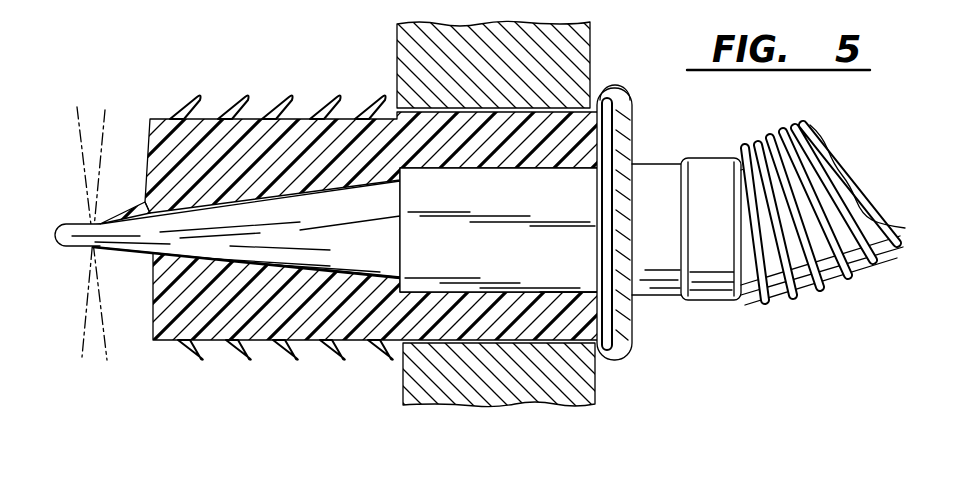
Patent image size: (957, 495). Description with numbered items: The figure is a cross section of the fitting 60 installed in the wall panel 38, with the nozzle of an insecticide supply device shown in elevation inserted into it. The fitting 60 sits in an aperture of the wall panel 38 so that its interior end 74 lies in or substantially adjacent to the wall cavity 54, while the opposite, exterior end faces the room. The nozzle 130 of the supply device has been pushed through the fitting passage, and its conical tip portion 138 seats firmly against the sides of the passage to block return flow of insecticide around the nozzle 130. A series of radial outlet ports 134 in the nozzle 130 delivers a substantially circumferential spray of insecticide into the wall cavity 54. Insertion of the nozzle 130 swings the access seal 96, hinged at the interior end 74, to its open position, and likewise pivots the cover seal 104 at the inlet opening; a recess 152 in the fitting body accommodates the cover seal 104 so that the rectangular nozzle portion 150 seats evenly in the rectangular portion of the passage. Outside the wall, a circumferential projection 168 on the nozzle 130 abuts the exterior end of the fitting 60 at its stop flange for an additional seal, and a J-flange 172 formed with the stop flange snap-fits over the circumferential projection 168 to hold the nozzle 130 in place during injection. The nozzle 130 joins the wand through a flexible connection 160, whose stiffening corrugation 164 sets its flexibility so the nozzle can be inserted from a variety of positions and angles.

The wall panel 38 is at (592, 52).
The wall cavity 54 is at (302, 47).
The fitting 60 is at (165, 111).
The interior end 74 is at (150, 130).
The access seal 96 is at (124, 203).
The cover seal 104 is at (498, 170).
The nozzle 130 is at (333, 205).
The radial outlet ports 134 is at (104, 246).
The conical tip portion 138 is at (158, 240).
The rectangular nozzle portion 150 is at (405, 340).
The recess 152 is at (600, 144).
The flexible connection 160 is at (808, 288).
The stiffening corrugation 164 is at (850, 276).
The circumferential projection 168 is at (632, 318).
The J-flange 172 is at (624, 92).